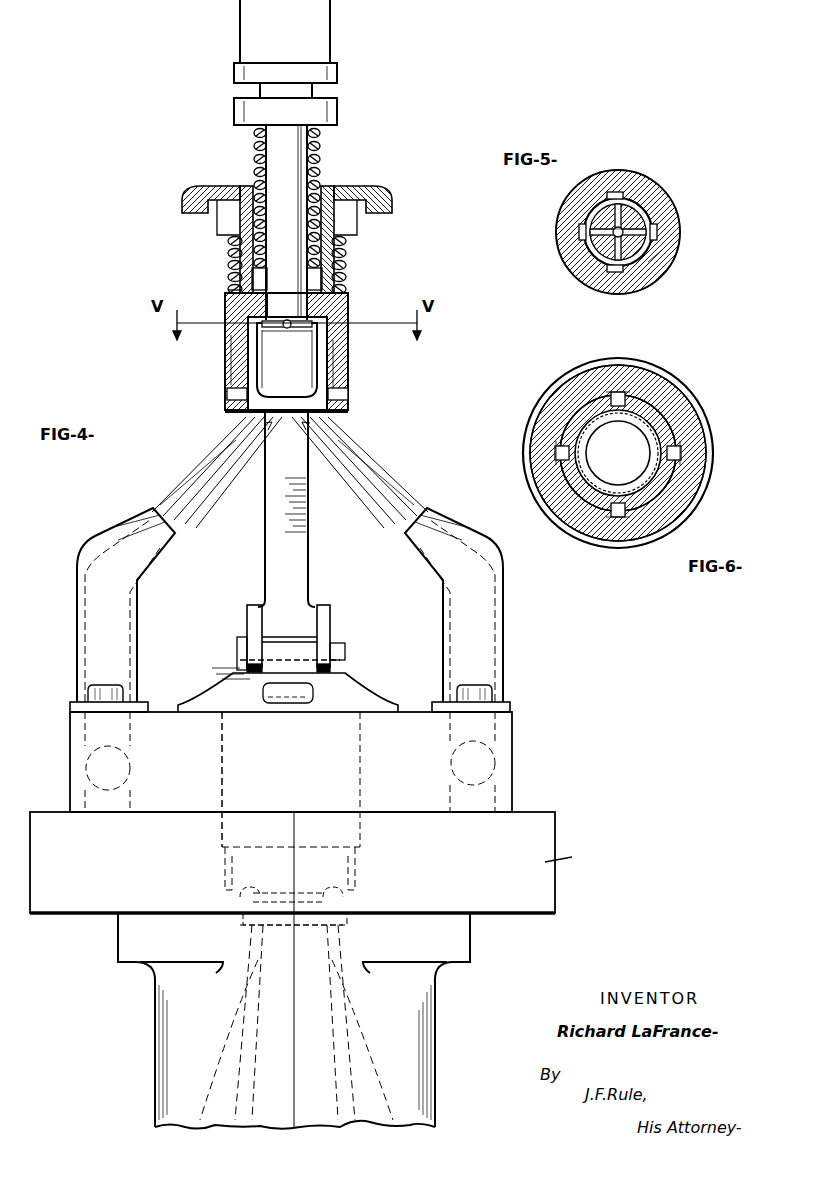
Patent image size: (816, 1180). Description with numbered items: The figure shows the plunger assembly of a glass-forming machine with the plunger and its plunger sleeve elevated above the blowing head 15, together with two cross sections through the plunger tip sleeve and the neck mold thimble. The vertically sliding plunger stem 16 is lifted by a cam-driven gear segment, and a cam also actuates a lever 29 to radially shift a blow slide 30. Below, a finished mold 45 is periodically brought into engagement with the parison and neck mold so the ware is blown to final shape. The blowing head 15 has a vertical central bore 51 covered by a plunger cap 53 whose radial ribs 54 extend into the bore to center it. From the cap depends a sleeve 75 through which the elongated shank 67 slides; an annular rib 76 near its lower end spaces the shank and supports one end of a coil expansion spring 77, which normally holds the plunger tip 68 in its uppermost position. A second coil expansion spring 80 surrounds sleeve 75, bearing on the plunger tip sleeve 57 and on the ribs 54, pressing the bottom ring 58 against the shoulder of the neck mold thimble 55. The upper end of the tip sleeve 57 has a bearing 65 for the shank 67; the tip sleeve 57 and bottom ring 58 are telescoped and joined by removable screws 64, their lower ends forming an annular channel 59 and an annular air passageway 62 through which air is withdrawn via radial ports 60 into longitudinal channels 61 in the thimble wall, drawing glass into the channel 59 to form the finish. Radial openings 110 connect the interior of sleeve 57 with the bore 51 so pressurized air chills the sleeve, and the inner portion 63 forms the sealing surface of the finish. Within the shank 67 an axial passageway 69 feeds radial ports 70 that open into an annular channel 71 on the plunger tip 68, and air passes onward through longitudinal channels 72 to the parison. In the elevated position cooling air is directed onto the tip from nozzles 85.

In FIG. 4, the plunger stem 16 is at (327, 22).
In FIG. 4, the shank 67 is at (293, 152).
In FIG. 4, the coil expansion spring 77 is at (312, 172).
In FIG. 4, the plunger cap 53 is at (387, 203).
In FIG. 4, the radial ribs 54 is at (352, 223).
In FIG. 4, the depending sleeve 75 is at (235, 248).
In FIG. 4, the annular rib 76 is at (233, 268).
In FIG. 4, the coil expansion spring 80 is at (343, 267).
In FIG. 4, the bearing 65 is at (312, 303).
In FIG. 4, the radial ports 70 is at (293, 320).
In FIG. 5, the radial ports 70 is at (622, 212).
In FIG. 4, the plunger tip sleeve 57 is at (340, 337).
In FIG. 5, the plunger tip sleeve 57 is at (670, 208).
In FIG. 4, the longitudinal channels 72 is at (320, 357).
In FIG. 5, the longitudinal channels 72 is at (653, 240).
In FIG. 4, the annular channel 71 is at (267, 331).
In FIG. 4, the plunger tip 68 is at (293, 389).
In FIG. 4, the removable screws 64 is at (347, 370).
In FIG. 4, the radial ports 60 is at (347, 392).
In FIG. 6, the radial ports 60 is at (675, 453).
In FIG. 4, the bottom ring 58 is at (347, 410).
In FIG. 4, the annular channel 59 is at (237, 413).
In FIG. 4, the lever 29 is at (306, 547).
In FIG. 4, the nozzles 85 is at (153, 568).
In FIG. 4, the blow slide 30 is at (348, 686).
In FIG. 4, the blowing head 15 is at (508, 738).
In FIG. 4, the central bore 51 is at (233, 776).
In FIG. 4, the longitudinal channels 61 is at (362, 867).
In FIG. 6, the longitudinal channels 61 is at (682, 463).
In FIG. 4, the finished mold 45 is at (428, 1048).
In FIG. 4, the radial openings 110 is at (233, 353).
In FIG. 5, the radial openings 110 is at (650, 267).
In FIG. 5, the axial passageway 69 is at (590, 276).
In FIG. 6, the neck mold thimble 55 is at (702, 432).
In FIG. 6, the annular air passageway 62 is at (650, 428).
In FIG. 6, the inner portion 63 is at (587, 440).